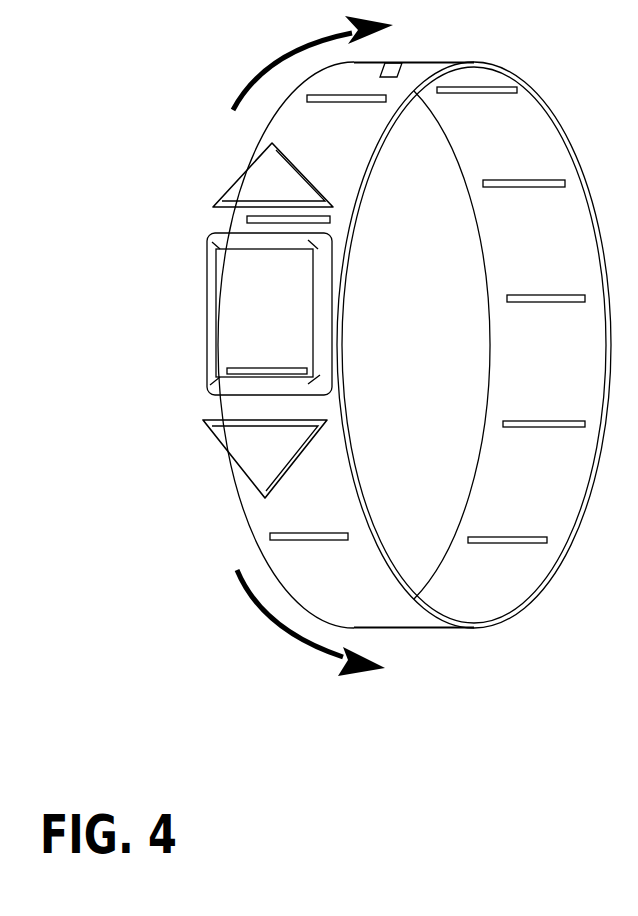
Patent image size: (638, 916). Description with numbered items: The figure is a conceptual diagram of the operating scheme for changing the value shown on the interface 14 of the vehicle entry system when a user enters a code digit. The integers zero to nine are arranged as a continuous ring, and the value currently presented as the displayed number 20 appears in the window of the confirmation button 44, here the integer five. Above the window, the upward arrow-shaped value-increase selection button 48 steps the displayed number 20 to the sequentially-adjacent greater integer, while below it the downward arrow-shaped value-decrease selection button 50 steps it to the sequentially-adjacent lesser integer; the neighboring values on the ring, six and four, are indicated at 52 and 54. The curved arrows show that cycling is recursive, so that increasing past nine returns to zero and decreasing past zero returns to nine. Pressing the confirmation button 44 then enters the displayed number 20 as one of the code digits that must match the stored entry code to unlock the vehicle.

The interface 14 is at (145, 311).
The displayed number 20 is at (290, 323).
The confirmation button 44 is at (210, 358).
The value-increase selection button 48 is at (230, 196).
The value-decrease selection button 50 is at (217, 432).
The adjacent indicium 6 52 is at (317, 170).
The adjacent indicium 4 54 is at (308, 488).